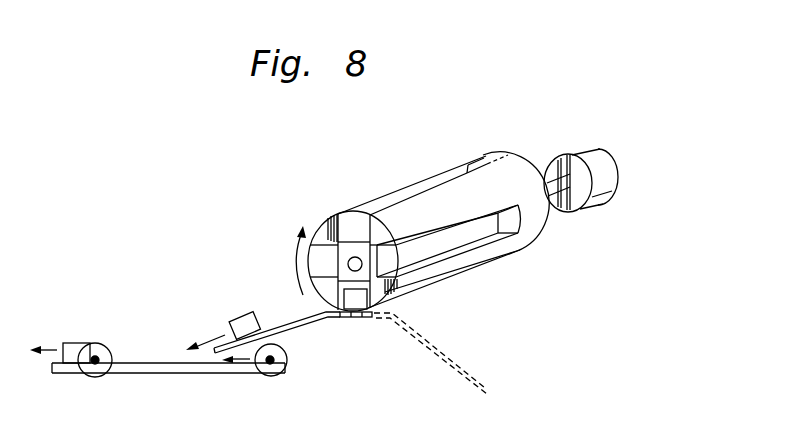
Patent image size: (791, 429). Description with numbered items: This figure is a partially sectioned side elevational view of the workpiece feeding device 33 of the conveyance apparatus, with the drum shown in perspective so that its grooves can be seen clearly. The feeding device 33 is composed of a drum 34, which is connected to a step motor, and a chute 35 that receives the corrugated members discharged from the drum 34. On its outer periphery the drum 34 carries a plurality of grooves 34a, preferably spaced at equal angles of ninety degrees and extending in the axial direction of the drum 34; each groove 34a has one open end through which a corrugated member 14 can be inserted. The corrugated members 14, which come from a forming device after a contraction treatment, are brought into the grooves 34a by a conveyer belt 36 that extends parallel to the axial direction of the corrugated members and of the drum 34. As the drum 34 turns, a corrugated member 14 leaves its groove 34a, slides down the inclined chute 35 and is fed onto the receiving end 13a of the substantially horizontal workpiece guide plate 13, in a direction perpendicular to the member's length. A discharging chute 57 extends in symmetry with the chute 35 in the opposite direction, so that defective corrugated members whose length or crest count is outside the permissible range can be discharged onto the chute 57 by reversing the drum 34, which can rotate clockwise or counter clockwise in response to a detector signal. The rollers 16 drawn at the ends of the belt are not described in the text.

The workpiece feeding device 33 is at (392, 209).
The drum 34 is at (385, 237).
The grooves 34a is at (362, 240).
The chute 35 is at (600, 150).
The corrugated members 14 is at (72, 343).
The workpiece guide plate 13 is at (153, 375).
The receiving end 13a is at (242, 373).
The conveyor roller 16 is at (103, 378).
The conveyer belt 36 is at (374, 320).
The discharging chute 57 is at (458, 371).